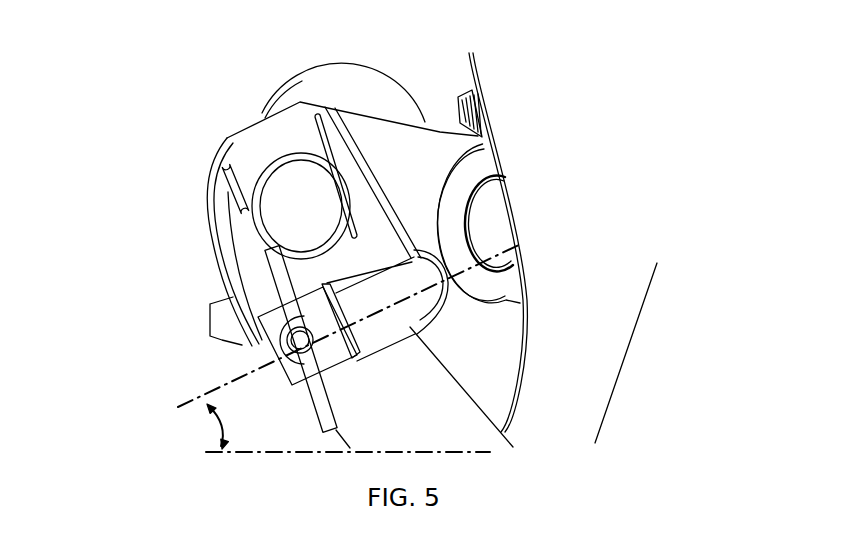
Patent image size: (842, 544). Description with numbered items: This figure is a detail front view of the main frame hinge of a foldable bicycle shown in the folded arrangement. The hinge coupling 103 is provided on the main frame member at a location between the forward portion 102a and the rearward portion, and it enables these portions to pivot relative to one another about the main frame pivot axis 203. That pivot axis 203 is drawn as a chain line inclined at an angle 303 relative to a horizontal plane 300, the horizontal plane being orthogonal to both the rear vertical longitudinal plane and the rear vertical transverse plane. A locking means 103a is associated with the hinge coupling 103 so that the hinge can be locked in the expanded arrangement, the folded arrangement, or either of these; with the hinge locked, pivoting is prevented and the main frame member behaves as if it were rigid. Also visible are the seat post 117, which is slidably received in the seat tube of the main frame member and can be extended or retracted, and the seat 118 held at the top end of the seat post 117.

The seat post 117 is at (405, 122).
The seat 118 is at (635, 330).
The forward portion of the main frame member 102a is at (480, 393).
The hinge coupling 103 is at (312, 342).
The locking means 103a is at (275, 290).
The main frame pivot axis 203 is at (175, 408).
The horizontal plane 300 is at (197, 452).
The angle 303 is at (213, 424).